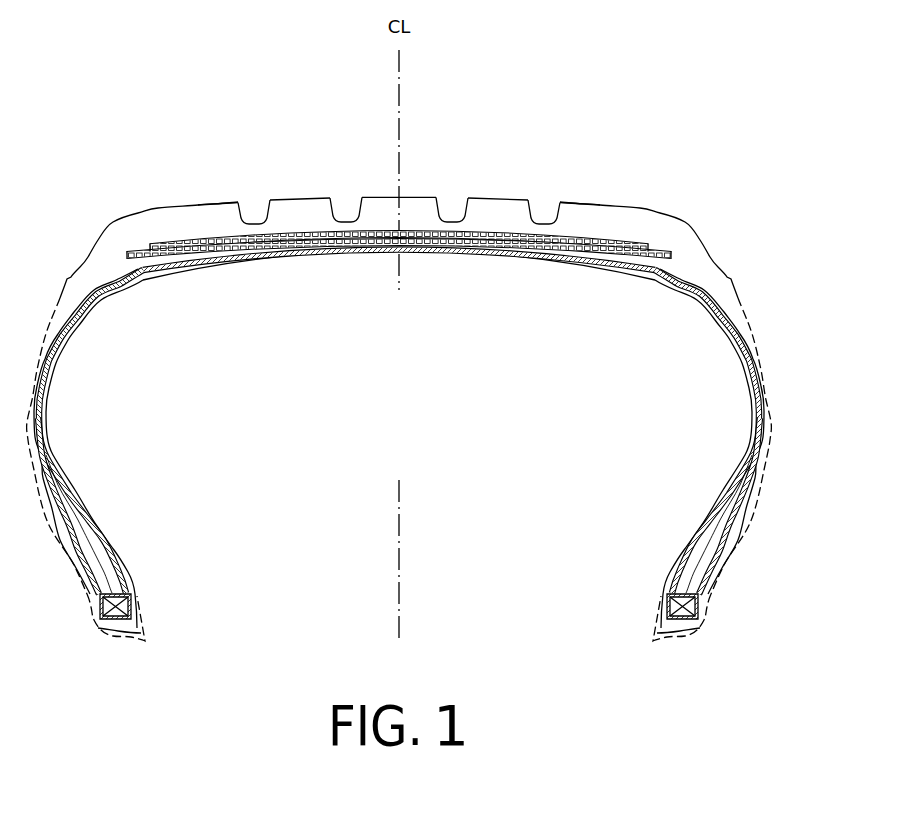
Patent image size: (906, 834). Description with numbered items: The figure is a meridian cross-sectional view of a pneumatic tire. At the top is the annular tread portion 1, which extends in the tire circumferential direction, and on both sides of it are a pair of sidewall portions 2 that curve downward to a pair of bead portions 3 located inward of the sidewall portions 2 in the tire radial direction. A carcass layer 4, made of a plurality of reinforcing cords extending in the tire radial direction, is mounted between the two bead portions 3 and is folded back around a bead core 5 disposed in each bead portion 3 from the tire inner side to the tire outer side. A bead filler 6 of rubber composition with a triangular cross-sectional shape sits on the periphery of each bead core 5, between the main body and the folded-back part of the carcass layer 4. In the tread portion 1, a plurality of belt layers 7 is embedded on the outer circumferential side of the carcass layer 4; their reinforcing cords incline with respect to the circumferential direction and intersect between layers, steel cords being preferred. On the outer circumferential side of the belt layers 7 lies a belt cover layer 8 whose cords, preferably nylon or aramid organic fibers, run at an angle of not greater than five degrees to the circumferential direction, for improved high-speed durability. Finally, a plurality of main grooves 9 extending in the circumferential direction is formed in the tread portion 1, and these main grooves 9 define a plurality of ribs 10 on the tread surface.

The tread portion 1 is at (414, 182).
The sidewall portion 2 is at (768, 361).
The bead portion 3 is at (713, 604).
The carcass layer 4 is at (720, 310).
The bead core 5 is at (665, 605).
The bead filler 6 is at (690, 574).
The belt layer 7 is at (552, 250).
The belt cover layer 8 is at (180, 237).
The main groove 9 is at (265, 211).
The rib 10 is at (217, 213).